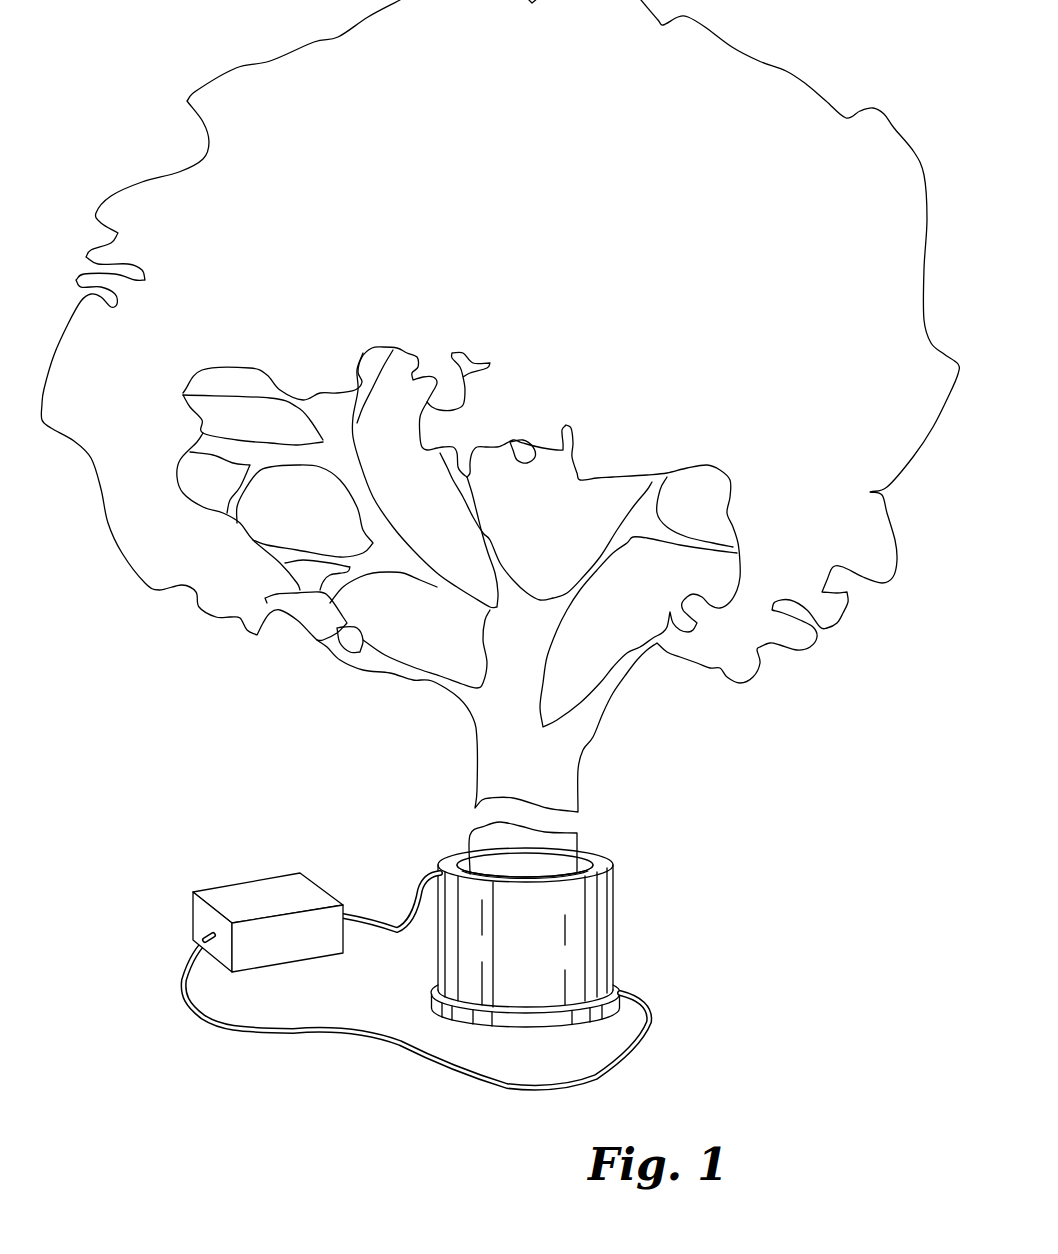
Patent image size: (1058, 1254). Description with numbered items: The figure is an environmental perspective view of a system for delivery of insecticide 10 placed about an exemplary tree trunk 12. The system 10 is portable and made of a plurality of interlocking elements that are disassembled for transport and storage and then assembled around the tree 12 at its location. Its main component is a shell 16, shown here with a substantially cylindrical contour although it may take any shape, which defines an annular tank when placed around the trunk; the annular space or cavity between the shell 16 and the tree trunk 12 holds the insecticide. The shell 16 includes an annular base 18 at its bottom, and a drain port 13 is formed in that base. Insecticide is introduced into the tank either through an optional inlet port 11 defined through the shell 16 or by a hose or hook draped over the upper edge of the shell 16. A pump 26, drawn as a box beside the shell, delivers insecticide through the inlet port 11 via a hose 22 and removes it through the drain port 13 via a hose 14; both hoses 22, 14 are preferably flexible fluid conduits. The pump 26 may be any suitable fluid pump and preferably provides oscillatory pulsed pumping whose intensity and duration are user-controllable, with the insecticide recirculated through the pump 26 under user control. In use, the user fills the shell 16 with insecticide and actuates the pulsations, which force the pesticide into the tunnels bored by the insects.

The system for delivery of insecticide 10 is at (491, 919).
The inlet port 11 is at (436, 868).
The tree trunk 12 is at (576, 802).
The drain port 13 is at (619, 996).
The hose 14 is at (647, 1035).
The shell 16 is at (610, 903).
The annular base 18 is at (616, 987).
The hose 22 is at (417, 882).
The pump 26 is at (232, 892).